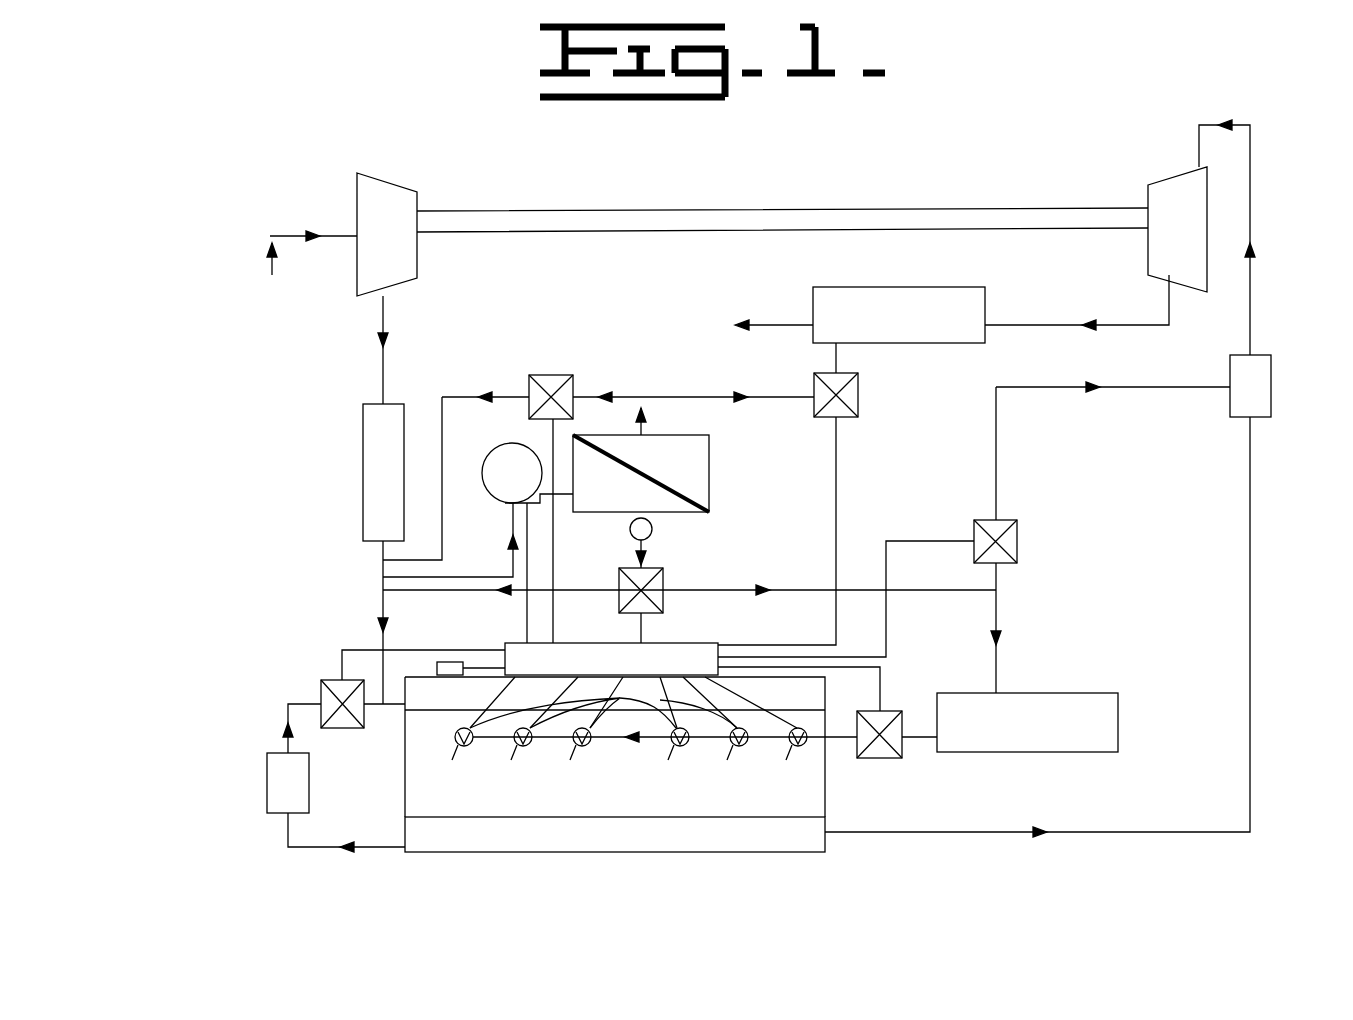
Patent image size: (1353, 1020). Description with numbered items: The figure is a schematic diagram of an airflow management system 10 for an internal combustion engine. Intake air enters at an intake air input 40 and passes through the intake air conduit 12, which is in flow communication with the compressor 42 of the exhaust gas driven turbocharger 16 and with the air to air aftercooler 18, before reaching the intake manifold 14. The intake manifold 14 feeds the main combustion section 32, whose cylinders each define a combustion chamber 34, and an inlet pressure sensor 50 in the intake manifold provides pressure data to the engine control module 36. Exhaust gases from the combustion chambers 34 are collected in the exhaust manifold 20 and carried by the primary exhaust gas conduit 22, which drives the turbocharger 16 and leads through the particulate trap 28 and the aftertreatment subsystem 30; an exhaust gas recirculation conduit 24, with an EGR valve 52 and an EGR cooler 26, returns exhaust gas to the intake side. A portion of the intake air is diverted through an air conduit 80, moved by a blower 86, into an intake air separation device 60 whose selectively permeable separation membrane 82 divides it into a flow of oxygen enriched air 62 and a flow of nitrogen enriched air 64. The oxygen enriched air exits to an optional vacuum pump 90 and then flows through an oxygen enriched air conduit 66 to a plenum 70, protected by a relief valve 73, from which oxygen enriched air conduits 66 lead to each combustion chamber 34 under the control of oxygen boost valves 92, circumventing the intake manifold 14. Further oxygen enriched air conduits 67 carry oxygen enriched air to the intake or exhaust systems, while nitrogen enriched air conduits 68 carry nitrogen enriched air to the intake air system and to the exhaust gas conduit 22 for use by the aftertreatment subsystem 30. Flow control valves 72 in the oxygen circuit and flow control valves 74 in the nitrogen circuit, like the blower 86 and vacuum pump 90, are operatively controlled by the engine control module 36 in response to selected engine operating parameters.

The airflow management system 10 is at (222, 132).
The intake air conduit 12 is at (381, 364).
The intake manifold 14 is at (800, 690).
The exhaust gas driven turbocharger 16 is at (686, 208).
The air to air aftercooler 18 is at (362, 415).
The exhaust manifold 20 is at (678, 853).
The primary exhaust gas conduit 22 is at (1253, 278).
The exhaust gas recirculation conduit 24 is at (283, 830).
The EGR cooler 26 is at (266, 766).
The particulate trap 28 is at (1273, 386).
The aftertreatment subsystem 30 is at (940, 287).
The main combustion section 32 is at (827, 773).
The combustion chamber 34 is at (436, 791).
The engine control module 36 is at (686, 643).
The intake air input 40 is at (307, 268).
The compressor 42 is at (397, 186).
The inlet pressure sensor 50 is at (436, 667).
The EGR valve 52 is at (320, 683).
The intake air separation device 60 is at (711, 465).
The oxygen enriched air 62 is at (668, 536).
The nitrogen enriched air 64 is at (676, 385).
The oxygen enriched air conduit 66 is at (852, 738).
The oxygen enriched air conduit 67 is at (592, 590).
The nitrogen enriched air conduit 68 is at (462, 397).
The plenum 70 is at (1120, 705).
The flow control valve 72 is at (665, 578).
The relief valve 73 is at (904, 718).
The flow control valve 74 is at (860, 392).
The air conduit 80 is at (490, 577).
The separation membrane 82 is at (665, 478).
The blower 86 is at (495, 450).
The vacuum pump 90 is at (630, 529).
The oxygen boost valve 92 is at (633, 702).